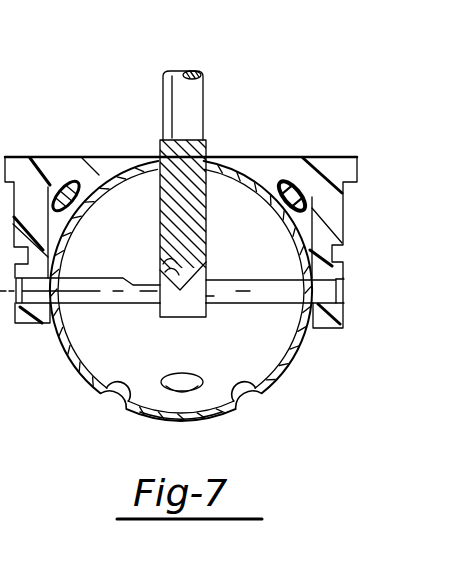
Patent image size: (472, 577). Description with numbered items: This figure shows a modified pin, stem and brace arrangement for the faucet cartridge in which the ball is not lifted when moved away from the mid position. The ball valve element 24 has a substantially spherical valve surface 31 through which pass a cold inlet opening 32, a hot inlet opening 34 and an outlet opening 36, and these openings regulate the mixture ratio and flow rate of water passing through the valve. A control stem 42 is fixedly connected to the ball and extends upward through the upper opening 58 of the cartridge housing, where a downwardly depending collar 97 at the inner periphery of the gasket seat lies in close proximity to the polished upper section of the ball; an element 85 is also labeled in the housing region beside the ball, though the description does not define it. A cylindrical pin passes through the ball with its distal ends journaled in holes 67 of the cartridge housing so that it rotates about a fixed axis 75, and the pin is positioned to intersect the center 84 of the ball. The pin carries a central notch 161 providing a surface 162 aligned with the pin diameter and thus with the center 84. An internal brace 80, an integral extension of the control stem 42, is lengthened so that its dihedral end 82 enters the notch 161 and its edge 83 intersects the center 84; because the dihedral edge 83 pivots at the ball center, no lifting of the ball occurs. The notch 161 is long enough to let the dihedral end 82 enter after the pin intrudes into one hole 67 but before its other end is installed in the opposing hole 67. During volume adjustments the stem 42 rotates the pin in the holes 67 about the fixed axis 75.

The ball valve element 24 is at (310, 360).
The spherical valve surface 31 is at (160, 414).
The cold inlet opening 32 is at (253, 392).
The hot inlet opening 34 is at (98, 387).
The outlet opening 36 is at (188, 387).
The control stem 42 is at (205, 110).
The upper opening 58 is at (135, 165).
The holes 67 is at (348, 283).
The fixed axis 75 is at (364, 292).
The internal brace 80 is at (207, 242).
The dihedral end 82 is at (185, 288).
The edge 83 is at (167, 303).
The center 84 is at (213, 303).
The seal 85 is at (97, 172).
The collar 97 is at (262, 183).
The central notch 161 is at (228, 286).
The surface 162 is at (147, 285).